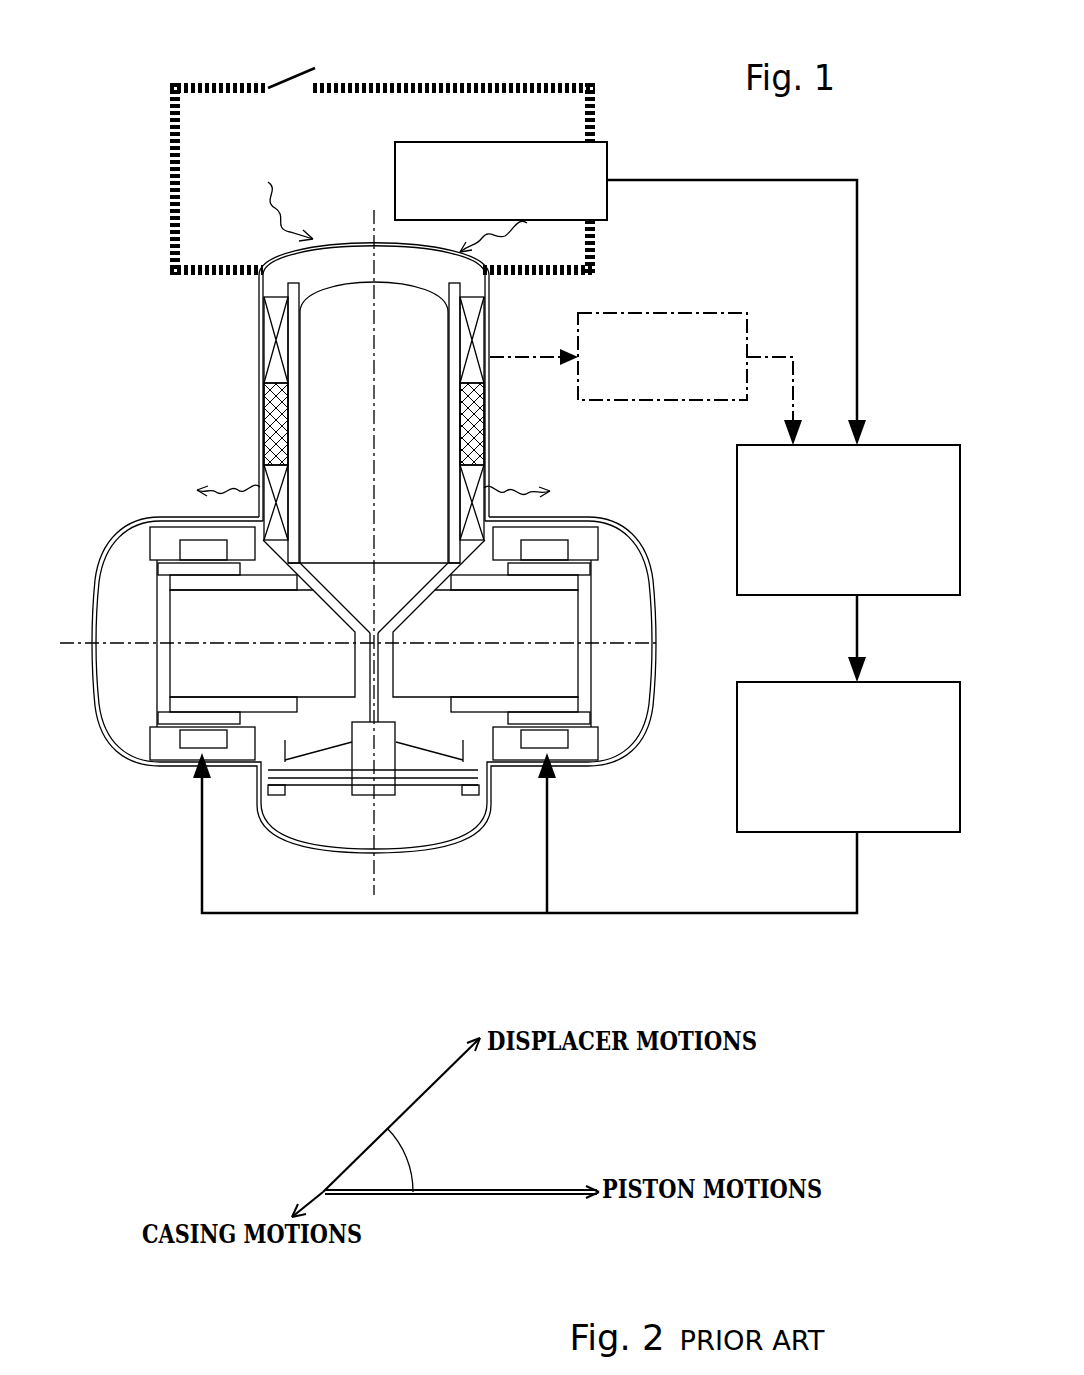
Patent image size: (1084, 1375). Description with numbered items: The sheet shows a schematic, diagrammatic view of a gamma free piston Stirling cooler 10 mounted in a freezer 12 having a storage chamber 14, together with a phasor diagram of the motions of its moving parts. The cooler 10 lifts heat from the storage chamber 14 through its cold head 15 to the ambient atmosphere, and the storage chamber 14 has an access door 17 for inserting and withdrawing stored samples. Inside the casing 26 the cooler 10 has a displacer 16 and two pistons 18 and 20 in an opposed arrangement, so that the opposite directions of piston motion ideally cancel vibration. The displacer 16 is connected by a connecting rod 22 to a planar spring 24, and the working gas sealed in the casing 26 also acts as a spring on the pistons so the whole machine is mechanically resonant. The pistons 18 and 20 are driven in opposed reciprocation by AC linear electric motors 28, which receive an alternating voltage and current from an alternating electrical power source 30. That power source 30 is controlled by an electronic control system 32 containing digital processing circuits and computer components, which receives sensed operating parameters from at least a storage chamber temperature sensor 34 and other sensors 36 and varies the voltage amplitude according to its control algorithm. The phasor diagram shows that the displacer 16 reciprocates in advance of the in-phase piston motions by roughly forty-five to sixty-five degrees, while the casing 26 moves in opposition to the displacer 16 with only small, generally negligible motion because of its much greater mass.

The gamma free piston Stirling cooler 10 is at (165, 385).
The freezer 12 is at (482, 85).
The storage chamber 14 is at (222, 135).
The cold head 15 is at (347, 243).
The displacer 16 is at (323, 348).
The access door 17 is at (295, 73).
The piston 18 is at (173, 653).
The piston 20 is at (570, 617).
The connecting rod 22 is at (370, 703).
The planar spring 24 is at (337, 783).
The casing 26 is at (118, 540).
The AC linear electric motors 28 is at (165, 747).
The alternating electrical power source 30 is at (888, 818).
The electronic control system 32 is at (782, 573).
The storage chamber temperature sensor 34 is at (593, 178).
The other sensors 36 is at (693, 322).